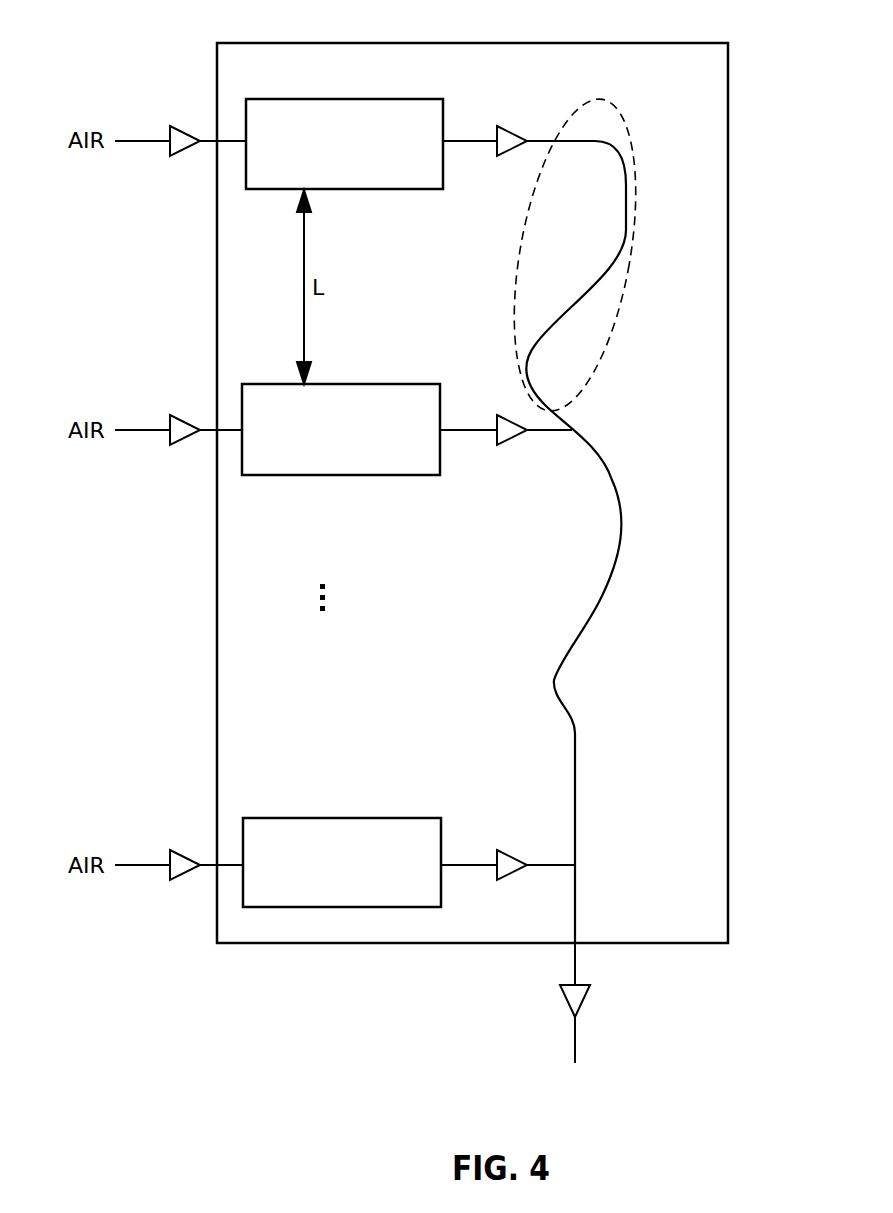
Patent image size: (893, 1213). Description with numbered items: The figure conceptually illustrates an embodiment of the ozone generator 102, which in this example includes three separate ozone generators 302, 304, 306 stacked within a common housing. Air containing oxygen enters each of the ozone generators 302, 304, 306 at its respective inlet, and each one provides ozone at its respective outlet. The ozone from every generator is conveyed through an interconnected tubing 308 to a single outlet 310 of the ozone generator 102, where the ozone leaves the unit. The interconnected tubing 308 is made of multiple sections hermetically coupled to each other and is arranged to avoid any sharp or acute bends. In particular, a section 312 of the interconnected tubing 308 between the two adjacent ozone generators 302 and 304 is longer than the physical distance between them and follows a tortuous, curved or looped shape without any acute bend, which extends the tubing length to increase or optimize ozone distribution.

The ozone generator 102 is at (593, 43).
The ozone generator 302 is at (370, 99).
The ozone generator 304 is at (348, 384).
The ozone generator 306 is at (368, 818).
The interconnected tubing 308 is at (637, 140).
The outlet 310 is at (576, 945).
The section 312 is at (605, 100).